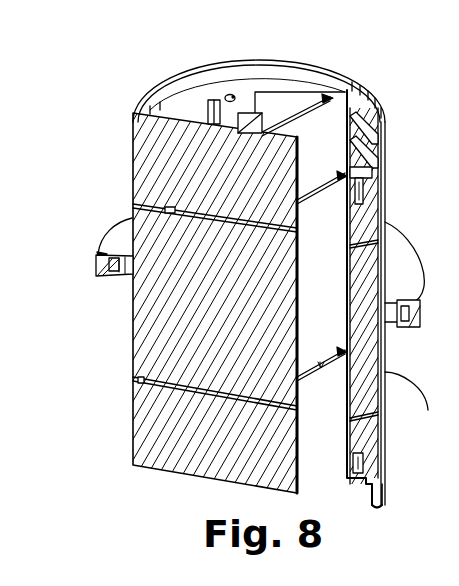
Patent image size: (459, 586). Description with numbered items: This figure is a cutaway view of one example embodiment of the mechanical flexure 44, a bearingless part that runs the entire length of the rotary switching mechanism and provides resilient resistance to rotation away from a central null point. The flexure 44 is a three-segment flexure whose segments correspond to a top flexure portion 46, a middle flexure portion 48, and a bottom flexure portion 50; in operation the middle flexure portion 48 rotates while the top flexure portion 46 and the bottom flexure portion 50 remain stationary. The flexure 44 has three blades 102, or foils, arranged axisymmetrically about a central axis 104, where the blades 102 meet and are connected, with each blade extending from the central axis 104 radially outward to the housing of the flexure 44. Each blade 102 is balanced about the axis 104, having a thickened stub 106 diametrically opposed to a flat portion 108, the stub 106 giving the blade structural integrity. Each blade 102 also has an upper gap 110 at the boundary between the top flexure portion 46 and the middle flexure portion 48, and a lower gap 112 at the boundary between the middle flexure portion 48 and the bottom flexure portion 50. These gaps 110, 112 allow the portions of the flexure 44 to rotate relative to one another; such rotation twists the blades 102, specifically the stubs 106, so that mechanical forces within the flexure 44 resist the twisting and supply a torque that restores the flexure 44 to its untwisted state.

The mechanical flexure 44 is at (99, 106).
The top flexure portion 46 is at (385, 190).
The middle flexure portion 48 is at (409, 407).
The bottom flexure portion 50 is at (370, 440).
The blade 102 is at (180, 100).
The central axis 104 is at (262, 132).
The thickened stub 106 is at (252, 124).
The flat portion 108 is at (175, 483).
The upper gap 110 is at (133, 201).
The lower gap 112 is at (133, 377).